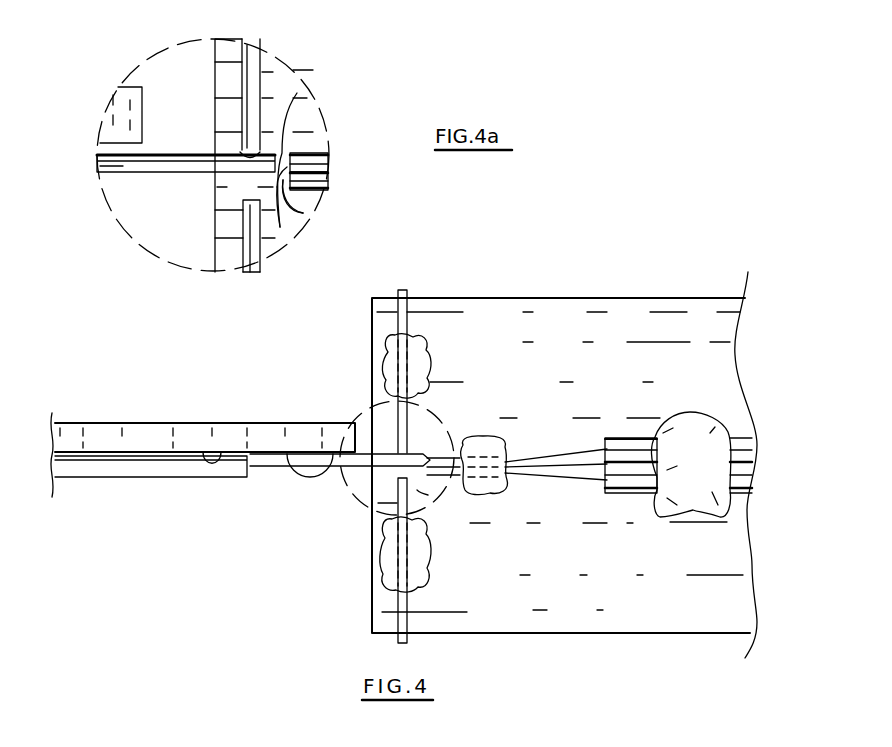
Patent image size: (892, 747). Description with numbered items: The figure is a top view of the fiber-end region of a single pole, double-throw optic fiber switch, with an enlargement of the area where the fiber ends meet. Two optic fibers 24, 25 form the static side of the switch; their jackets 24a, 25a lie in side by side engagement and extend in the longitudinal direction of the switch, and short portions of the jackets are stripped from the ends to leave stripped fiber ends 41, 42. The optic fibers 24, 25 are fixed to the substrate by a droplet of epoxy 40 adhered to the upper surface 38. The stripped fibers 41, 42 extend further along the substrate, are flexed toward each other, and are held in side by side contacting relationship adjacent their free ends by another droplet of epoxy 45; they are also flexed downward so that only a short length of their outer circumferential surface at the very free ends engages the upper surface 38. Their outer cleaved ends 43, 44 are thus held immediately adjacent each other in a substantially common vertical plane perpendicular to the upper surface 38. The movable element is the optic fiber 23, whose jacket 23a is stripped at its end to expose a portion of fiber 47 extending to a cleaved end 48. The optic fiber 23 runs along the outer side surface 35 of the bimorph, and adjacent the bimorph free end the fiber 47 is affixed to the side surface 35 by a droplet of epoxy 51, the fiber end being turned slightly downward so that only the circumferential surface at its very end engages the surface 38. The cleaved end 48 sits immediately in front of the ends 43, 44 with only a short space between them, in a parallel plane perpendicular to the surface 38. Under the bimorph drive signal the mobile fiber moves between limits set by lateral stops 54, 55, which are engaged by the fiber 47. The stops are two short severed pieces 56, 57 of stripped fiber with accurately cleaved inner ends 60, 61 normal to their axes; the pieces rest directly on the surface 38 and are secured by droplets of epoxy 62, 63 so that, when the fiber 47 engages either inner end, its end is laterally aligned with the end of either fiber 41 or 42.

In FIG. 4, the optic fiber 23 is at (153, 460).
In FIG. 4, the jacket 23a is at (250, 477).
In FIG. 4, the optic fiber 24 is at (741, 450).
In FIG. 4, the jacket 24a is at (618, 440).
In FIG. 4, the optic fiber 25 is at (738, 478).
In FIG. 4, the jacket 25a is at (633, 478).
In FIG. 4, the outer side surface 35 is at (218, 460).
In FIG. 4A, the upper surface 38 is at (283, 96).
In FIG. 4, the droplet of epoxy 40 is at (690, 437).
In FIG. 4A, the stripped fiber end 41 is at (330, 162).
In FIG. 4, the stripped fiber end 41 is at (533, 453).
In FIG. 4A, the stripped fiber end 42 is at (320, 180).
In FIG. 4, the stripped fiber end 42 is at (543, 483).
In FIG. 4A, the cleaved end 43 is at (280, 238).
In FIG. 4, the cleaved end 43 is at (433, 460).
In FIG. 4A, the cleaved end 44 is at (303, 213).
In FIG. 4, the cleaved end 44 is at (422, 492).
In FIG. 4, the droplet of epoxy 45 is at (498, 493).
In FIG. 4A, the exposed fiber 47 is at (160, 165).
In FIG. 4, the exposed fiber 47 is at (355, 485).
In FIG. 4A, the cleaved end 48 is at (306, 92).
In FIG. 4, the cleaved end 48 is at (392, 478).
In FIG. 4, the droplet of epoxy 51 is at (305, 470).
In FIG. 4, the lateral stop 54 is at (390, 391).
In FIG. 4, the lateral stop 55 is at (390, 478).
In FIG. 4A, the severed fiber piece 56 is at (255, 62).
In FIG. 4, the severed fiber piece 56 is at (406, 304).
In FIG. 4A, the severed fiber piece 57 is at (255, 260).
In FIG. 4, the severed fiber piece 57 is at (400, 623).
In FIG. 4A, the cleaved inner end 60 is at (232, 135).
In FIG. 4A, the cleaved inner end 61 is at (235, 205).
In FIG. 4, the droplet of epoxy 62 is at (428, 372).
In FIG. 4, the droplet of epoxy 63 is at (382, 540).